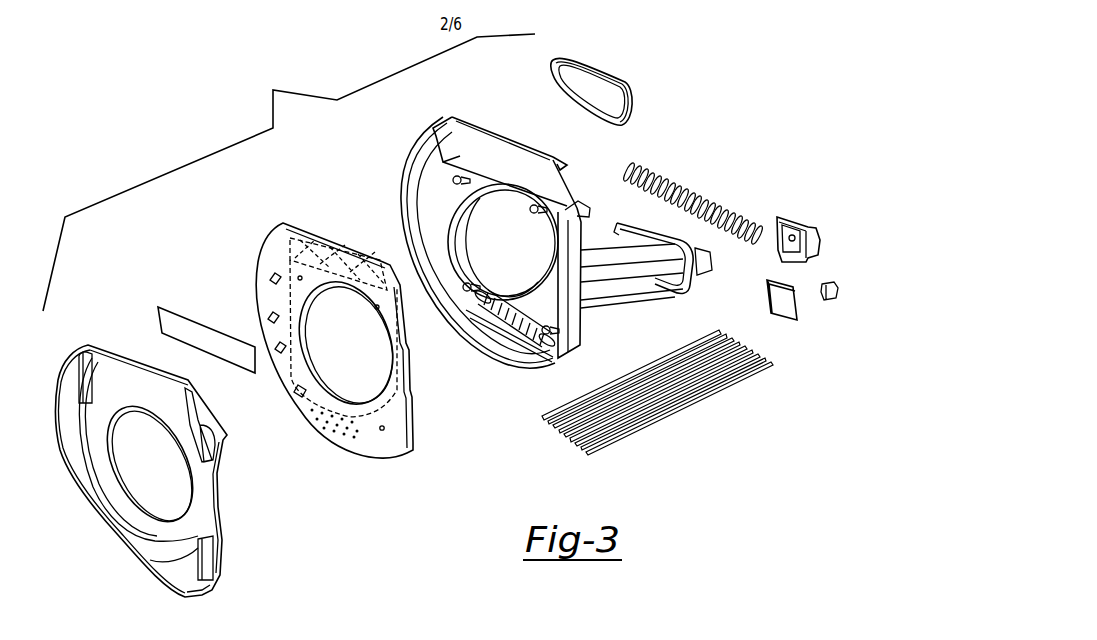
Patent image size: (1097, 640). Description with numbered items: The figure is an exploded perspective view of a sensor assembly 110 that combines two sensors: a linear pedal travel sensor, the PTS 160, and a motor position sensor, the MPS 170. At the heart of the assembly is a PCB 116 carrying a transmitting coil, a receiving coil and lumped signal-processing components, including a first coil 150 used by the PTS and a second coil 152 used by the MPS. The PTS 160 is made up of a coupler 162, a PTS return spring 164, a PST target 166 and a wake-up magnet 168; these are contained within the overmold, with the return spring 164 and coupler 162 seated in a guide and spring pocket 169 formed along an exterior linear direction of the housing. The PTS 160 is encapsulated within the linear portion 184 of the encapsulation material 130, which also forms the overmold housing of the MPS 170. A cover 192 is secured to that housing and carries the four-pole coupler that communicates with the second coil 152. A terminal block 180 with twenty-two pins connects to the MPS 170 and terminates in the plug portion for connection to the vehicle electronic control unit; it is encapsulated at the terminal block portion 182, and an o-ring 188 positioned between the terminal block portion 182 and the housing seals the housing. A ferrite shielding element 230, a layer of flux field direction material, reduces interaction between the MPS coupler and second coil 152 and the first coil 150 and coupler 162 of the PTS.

The sensor assembly 110 is at (126, 291).
The PCB 116 is at (278, 370).
The encapsulation material 130 is at (473, 333).
The first coil 150 is at (290, 252).
The second coil 152 is at (283, 300).
The PTS 160 is at (776, 189).
The coupler 162 is at (795, 236).
The PTS return spring 164 is at (700, 188).
The PST target 166 is at (773, 312).
The wake-up magnet 168 is at (838, 290).
The guide and spring pocket 169 is at (588, 166).
The MPS 170 is at (70, 522).
The terminal block 180 is at (673, 400).
The terminal block portion 182 is at (623, 293).
The linear portion 184 is at (460, 155).
The o-ring 188 is at (587, 72).
The cover 192 is at (170, 572).
The ferrite shielding element 230 is at (207, 337).